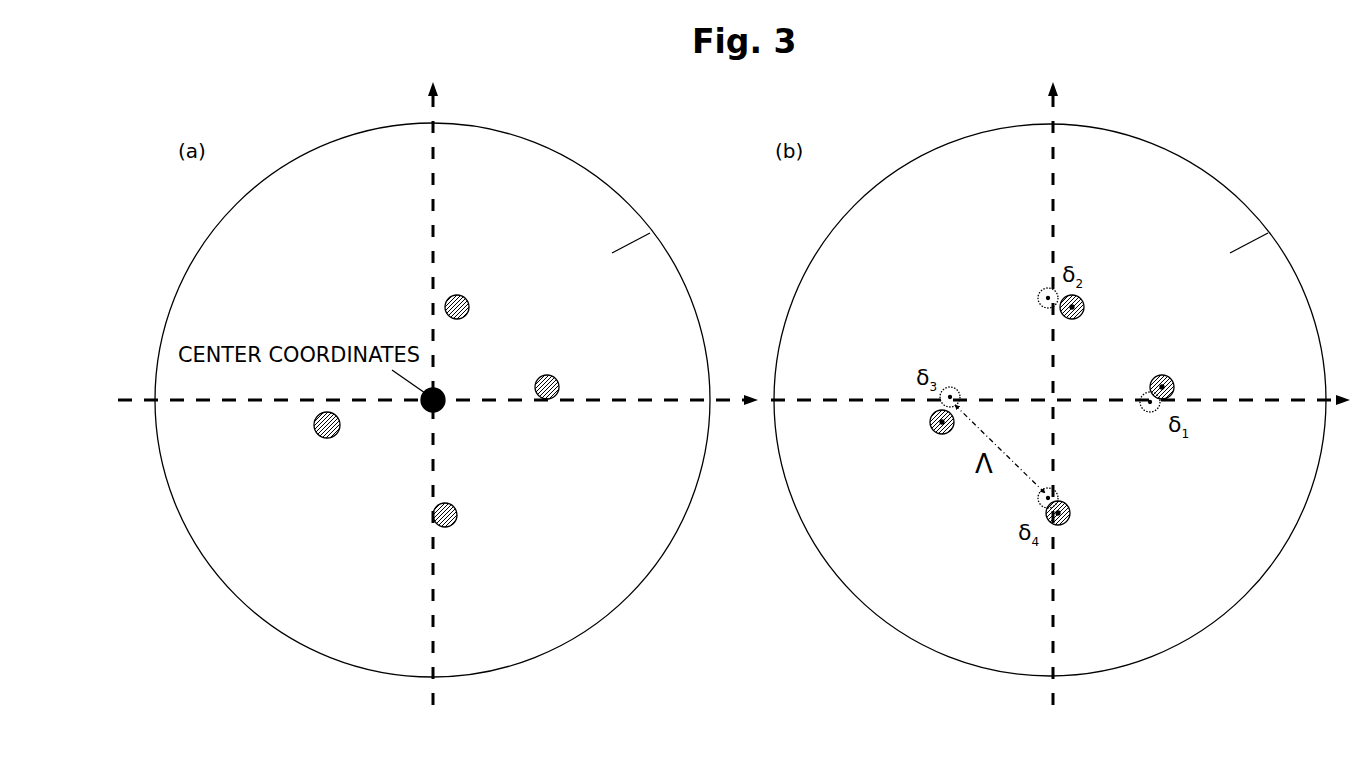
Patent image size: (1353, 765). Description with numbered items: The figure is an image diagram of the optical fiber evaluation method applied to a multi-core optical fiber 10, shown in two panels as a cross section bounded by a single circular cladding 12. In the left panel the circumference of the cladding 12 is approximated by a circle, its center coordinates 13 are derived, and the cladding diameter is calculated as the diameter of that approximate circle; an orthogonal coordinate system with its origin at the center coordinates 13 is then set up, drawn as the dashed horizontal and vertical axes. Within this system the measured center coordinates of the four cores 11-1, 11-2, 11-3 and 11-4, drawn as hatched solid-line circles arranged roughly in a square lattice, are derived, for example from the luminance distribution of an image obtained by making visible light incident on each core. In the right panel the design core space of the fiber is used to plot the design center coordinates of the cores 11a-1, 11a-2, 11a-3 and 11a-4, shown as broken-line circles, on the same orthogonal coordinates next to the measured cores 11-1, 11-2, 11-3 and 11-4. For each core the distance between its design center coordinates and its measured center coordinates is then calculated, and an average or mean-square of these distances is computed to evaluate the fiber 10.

The multi-core optical fiber 10 is at (568, 156).
The cladding 12 is at (650, 233).
The center coordinates 13 is at (444, 393).
The core 11-1 is at (556, 379).
The core 11-2 is at (466, 298).
The core 11-3 is at (317, 435).
The core 11-4 is at (455, 505).
The core on design 11a-1 is at (1141, 395).
The core on design 11a-2 is at (1039, 292).
The core on design 11a-3 is at (953, 387).
The core on design 11a-4 is at (1059, 494).